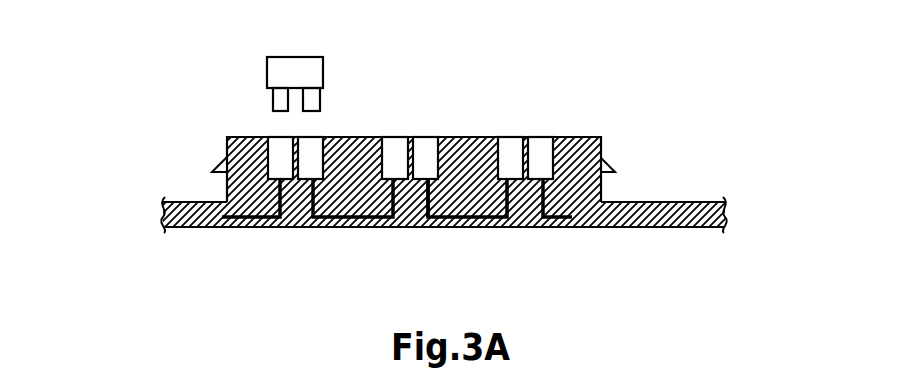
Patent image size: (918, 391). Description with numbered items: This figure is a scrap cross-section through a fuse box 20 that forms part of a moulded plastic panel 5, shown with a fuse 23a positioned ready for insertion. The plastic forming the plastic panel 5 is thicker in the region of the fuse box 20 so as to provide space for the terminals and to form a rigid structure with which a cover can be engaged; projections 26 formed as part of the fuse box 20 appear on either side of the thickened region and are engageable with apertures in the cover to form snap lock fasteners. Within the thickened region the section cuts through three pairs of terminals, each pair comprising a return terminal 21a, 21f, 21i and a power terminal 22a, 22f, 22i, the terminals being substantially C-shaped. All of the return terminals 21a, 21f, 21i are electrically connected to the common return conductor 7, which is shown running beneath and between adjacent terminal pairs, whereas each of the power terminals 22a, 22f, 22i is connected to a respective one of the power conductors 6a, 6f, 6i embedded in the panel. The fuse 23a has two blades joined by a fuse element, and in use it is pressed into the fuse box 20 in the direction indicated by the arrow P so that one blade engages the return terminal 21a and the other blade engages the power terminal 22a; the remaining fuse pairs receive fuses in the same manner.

The plastic panel 5 is at (200, 195).
The fuse box 20 is at (576, 127).
The projections 26 is at (210, 172).
The return terminal 21a is at (318, 137).
The power terminal 22a is at (272, 137).
The return terminal 21f is at (397, 136).
The power terminal 22f is at (427, 137).
The return terminal 21i is at (512, 136).
The power terminal 22i is at (545, 137).
The fuse 23a is at (270, 77).
The power conductor 6a is at (235, 227).
The power conductor 6f is at (437, 227).
The power conductor 6i is at (557, 227).
The common return conductor 7 is at (354, 227).
The pressing force P is at (526, 98).